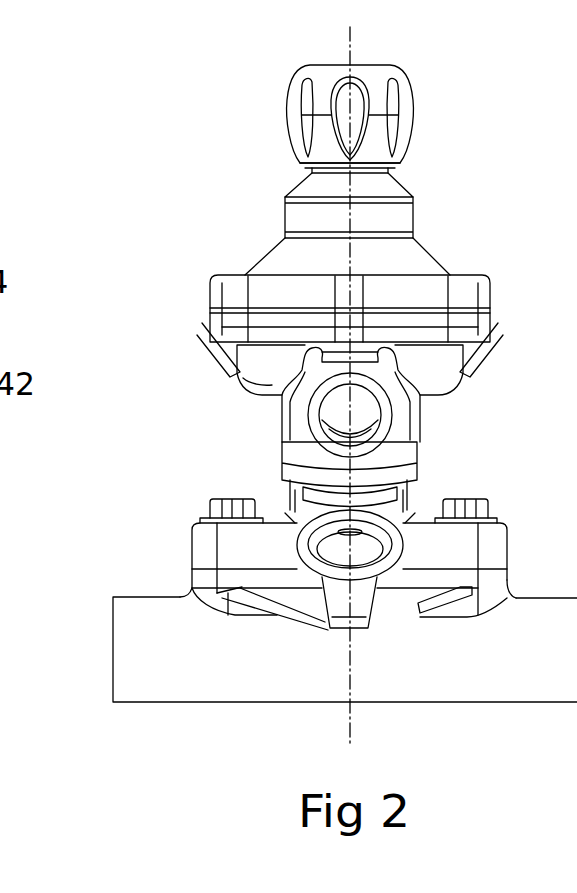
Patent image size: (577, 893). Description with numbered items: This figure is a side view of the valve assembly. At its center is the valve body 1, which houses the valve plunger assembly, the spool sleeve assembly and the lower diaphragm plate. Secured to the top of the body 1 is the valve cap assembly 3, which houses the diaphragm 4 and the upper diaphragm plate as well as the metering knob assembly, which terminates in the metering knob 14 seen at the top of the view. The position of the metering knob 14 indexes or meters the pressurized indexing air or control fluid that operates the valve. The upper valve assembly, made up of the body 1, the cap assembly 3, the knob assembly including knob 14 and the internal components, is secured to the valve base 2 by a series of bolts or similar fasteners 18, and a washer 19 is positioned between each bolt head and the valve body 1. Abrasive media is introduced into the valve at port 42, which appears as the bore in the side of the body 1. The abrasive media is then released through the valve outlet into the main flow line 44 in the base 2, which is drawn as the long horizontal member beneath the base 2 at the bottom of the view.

The valve body 1 is at (200, 538).
The valve base 2 is at (497, 588).
The valve cap assembly 3 is at (423, 260).
The diaphragm 4 is at (350, 27).
The metering knob 14 is at (408, 114).
The bolts or similar fasteners 18 is at (465, 502).
The washer 19 is at (495, 518).
The port 42 is at (390, 420).
The main flow line 44 is at (102, 648).